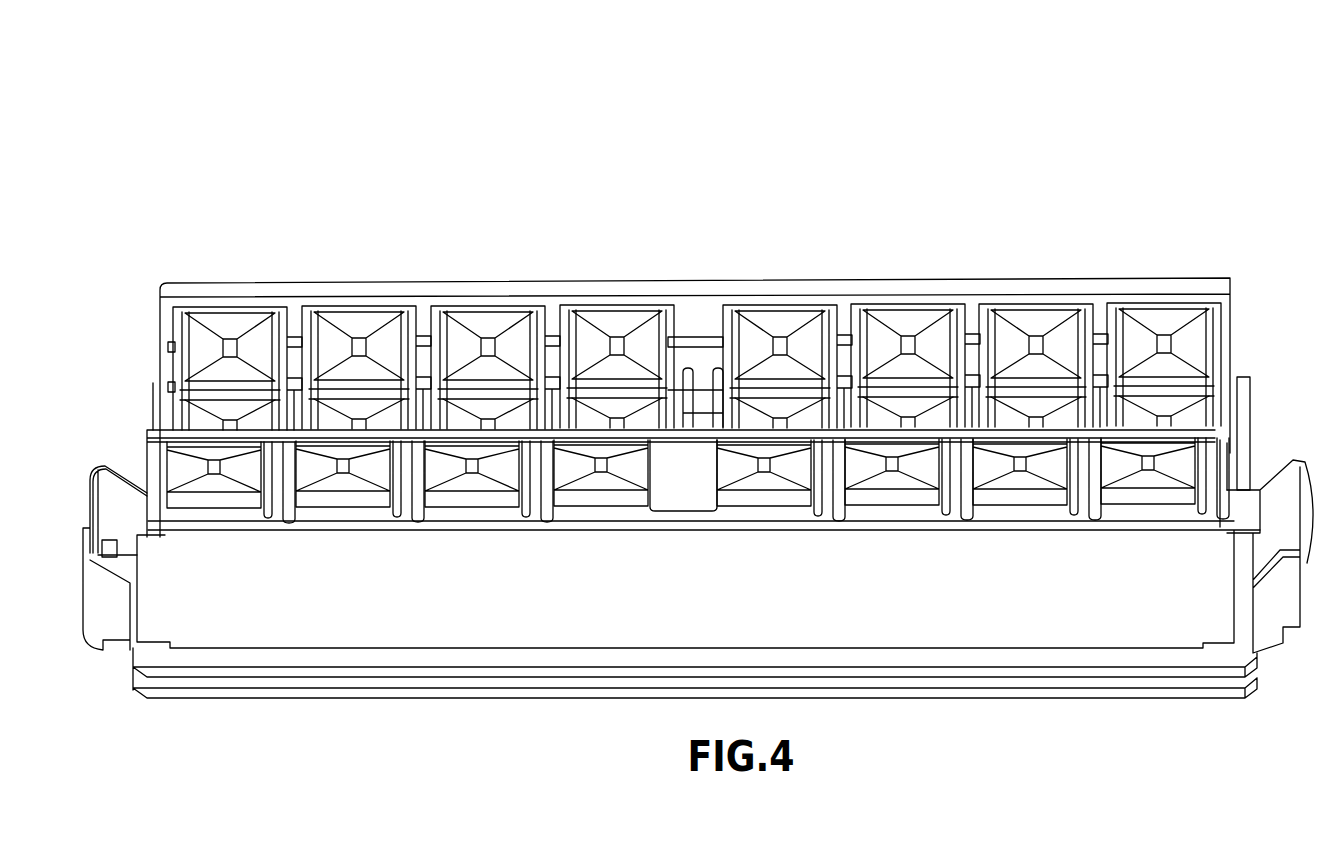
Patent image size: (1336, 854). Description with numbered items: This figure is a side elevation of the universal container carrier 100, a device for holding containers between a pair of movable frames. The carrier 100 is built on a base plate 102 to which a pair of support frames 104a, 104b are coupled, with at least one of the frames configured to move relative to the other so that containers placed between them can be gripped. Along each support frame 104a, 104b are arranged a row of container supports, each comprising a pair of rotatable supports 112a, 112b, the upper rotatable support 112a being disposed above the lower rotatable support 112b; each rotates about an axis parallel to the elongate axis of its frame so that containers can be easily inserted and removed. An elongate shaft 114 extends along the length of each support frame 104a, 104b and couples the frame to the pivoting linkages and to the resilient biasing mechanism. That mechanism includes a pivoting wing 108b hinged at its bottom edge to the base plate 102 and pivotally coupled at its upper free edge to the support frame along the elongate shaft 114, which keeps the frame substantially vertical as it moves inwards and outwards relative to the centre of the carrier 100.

The universal container carrier 100 is at (692, 402).
The base plate 102 is at (1207, 681).
The support frame 104a is at (1213, 292).
The support frame 104b is at (149, 467).
The pivoting wing 108b is at (618, 605).
The rotatable support 112a is at (234, 314).
The rotatable support 112b is at (216, 394).
The elongate shaft 114 is at (705, 383).